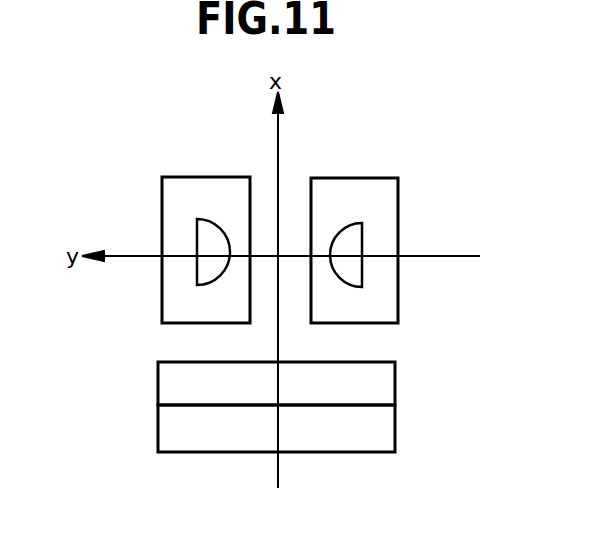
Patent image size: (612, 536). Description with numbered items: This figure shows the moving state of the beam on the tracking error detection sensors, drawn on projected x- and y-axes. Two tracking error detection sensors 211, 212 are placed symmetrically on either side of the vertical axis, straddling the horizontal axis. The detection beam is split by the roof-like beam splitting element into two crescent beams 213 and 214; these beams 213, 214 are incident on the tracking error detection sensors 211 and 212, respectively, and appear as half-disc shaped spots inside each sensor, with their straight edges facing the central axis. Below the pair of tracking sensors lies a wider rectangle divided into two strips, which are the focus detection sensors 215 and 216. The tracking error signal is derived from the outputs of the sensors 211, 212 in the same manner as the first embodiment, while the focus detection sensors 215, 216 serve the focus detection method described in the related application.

The tracking error detection sensor 211 is at (368, 193).
The tracking error detection sensor 212 is at (205, 190).
The crescent beam 213 is at (362, 237).
The crescent beam 214 is at (197, 225).
The focus detection sensor 215 is at (385, 386).
The focus detection sensor 216 is at (373, 438).